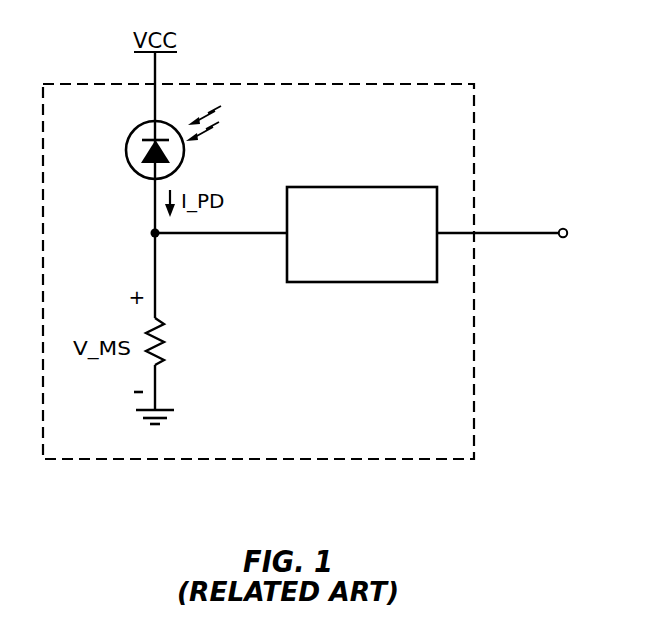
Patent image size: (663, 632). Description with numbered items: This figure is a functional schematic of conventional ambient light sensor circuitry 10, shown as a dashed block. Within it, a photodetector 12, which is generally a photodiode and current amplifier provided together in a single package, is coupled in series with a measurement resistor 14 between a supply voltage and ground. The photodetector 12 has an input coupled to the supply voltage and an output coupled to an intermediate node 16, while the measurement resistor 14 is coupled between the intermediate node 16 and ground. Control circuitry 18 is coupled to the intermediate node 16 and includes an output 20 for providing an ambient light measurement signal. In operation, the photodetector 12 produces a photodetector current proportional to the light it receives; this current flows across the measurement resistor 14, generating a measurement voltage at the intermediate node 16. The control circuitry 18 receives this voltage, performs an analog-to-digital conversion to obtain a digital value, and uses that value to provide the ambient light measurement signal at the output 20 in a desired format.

The conventional ambient light sensor circuitry 10 is at (450, 444).
The photodetector 12 is at (135, 131).
The measurement resistor 14 is at (168, 347).
The intermediate node 16 is at (153, 234).
The control circuitry 18 is at (350, 258).
The output 20 is at (568, 229).